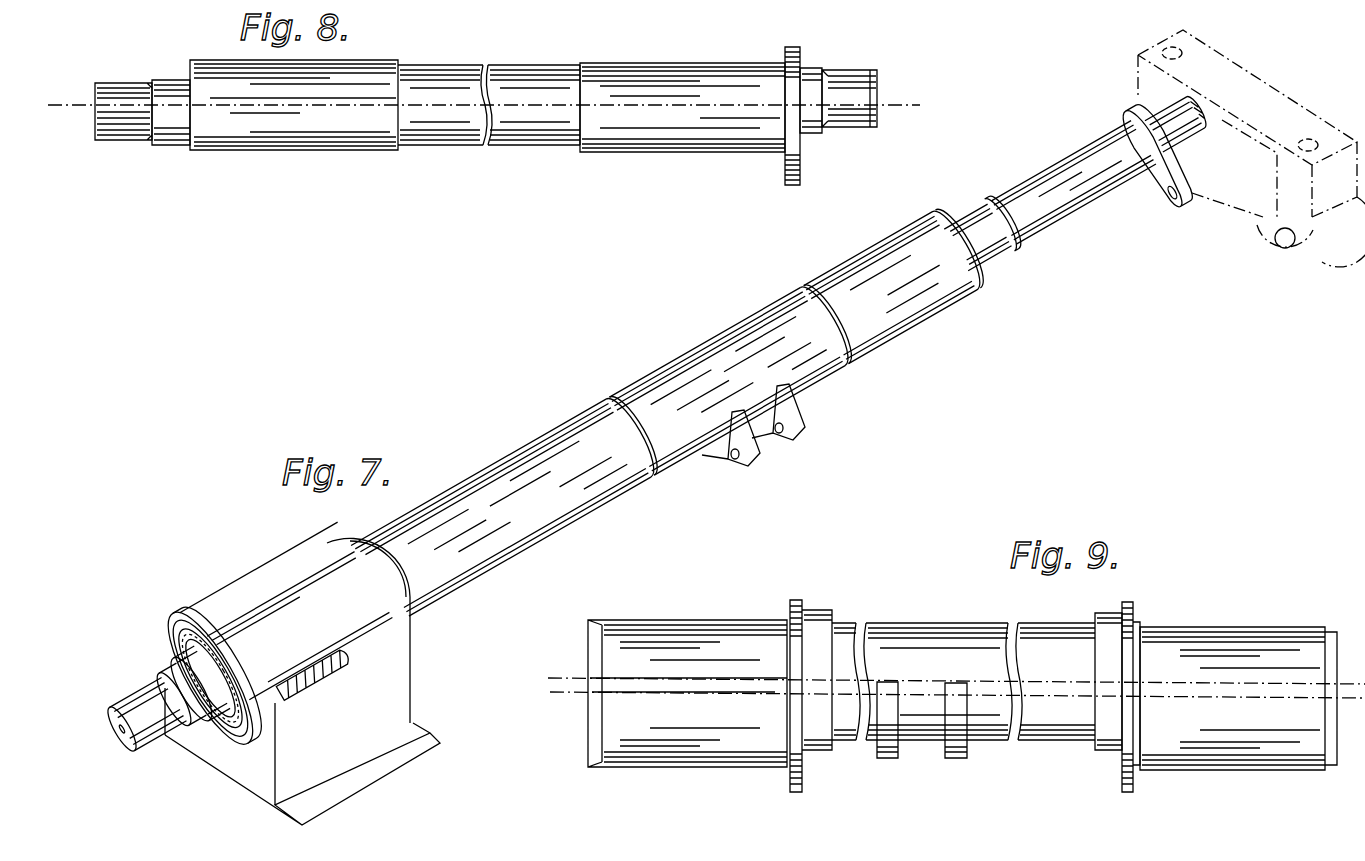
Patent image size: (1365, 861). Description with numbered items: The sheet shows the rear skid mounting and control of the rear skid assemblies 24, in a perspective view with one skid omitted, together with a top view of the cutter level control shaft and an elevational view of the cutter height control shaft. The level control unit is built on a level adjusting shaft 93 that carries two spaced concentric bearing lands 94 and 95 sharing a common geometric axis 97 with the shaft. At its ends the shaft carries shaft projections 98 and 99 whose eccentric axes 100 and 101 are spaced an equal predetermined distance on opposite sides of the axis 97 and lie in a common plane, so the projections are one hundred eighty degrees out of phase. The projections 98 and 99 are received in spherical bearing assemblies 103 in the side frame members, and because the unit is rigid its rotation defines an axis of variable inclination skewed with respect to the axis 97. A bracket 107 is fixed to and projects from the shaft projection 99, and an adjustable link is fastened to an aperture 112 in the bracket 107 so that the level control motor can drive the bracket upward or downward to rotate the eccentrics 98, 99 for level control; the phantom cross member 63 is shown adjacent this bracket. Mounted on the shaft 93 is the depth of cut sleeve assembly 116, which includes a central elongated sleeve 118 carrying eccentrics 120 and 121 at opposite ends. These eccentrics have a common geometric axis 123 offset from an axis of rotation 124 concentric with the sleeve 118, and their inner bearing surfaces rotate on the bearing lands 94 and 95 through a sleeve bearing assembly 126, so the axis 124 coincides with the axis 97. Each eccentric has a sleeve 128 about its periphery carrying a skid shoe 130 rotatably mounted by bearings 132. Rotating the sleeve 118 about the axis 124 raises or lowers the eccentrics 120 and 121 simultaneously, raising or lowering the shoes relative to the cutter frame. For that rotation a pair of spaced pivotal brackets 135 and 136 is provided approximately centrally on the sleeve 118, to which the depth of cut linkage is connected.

In FIG. 7, the rear skid assembly 24 is at (418, 693).
In FIG. 7, the cross member bracket 63 is at (1328, 238).
In FIG. 8, the level adjusting shaft 93 is at (450, 140).
In FIG. 7, the level adjusting shaft 93 is at (973, 222).
In FIG. 8, the bearing land 94 is at (307, 152).
In FIG. 7, the bearing land 94 is at (178, 659).
In FIG. 8, the bearing land 95 is at (680, 153).
In FIG. 7, the bearing land 95 is at (1040, 180).
In FIG. 8, the geometric axis 97 is at (538, 100).
In FIG. 8, the shaft projection 98 is at (122, 90).
In FIG. 7, the shaft projection 98 is at (152, 740).
In FIG. 8, the shaft projection 99 is at (865, 78).
In FIG. 8, the eccentric axis 100 is at (170, 113).
In FIG. 7, the eccentric axis 100 is at (178, 696).
In FIG. 8, the eccentric axis 101 is at (837, 98).
In FIG. 7, the spherical bearing assembly 103 is at (1185, 115).
In FIG. 8, the bracket 107 is at (793, 182).
In FIG. 7, the bracket 107 is at (1152, 197).
In FIG. 7, the aperture 112 is at (1176, 205).
In FIG. 7, the depth of cut sleeve assembly 116 is at (512, 450).
In FIG. 9, the depth of cut sleeve assembly 116 is at (973, 608).
In FIG. 7, the central elongated sleeve 118 is at (688, 373).
In FIG. 9, the central elongated sleeve 118 is at (925, 637).
In FIG. 7, the eccentric 120 is at (273, 647).
In FIG. 9, the eccentric 120 is at (655, 635).
In FIG. 7, the eccentric 121 is at (898, 283).
In FIG. 9, the eccentric 121 is at (1210, 647).
In FIG. 9, the geometric axis 123 is at (707, 693).
In FIG. 9, the axis of rotation 124 is at (762, 677).
In FIG. 7, the sleeve bearing assembly 126 is at (213, 650).
In FIG. 7, the sleeve 128 is at (263, 727).
In FIG. 7, the skid shoe 130 is at (413, 737).
In FIG. 7, the bearing 132 is at (320, 653).
In FIG. 7, the bracket 135 is at (743, 466).
In FIG. 9, the bracket 135 is at (890, 762).
In FIG. 7, the bracket 136 is at (785, 443).
In FIG. 9, the bracket 136 is at (957, 760).